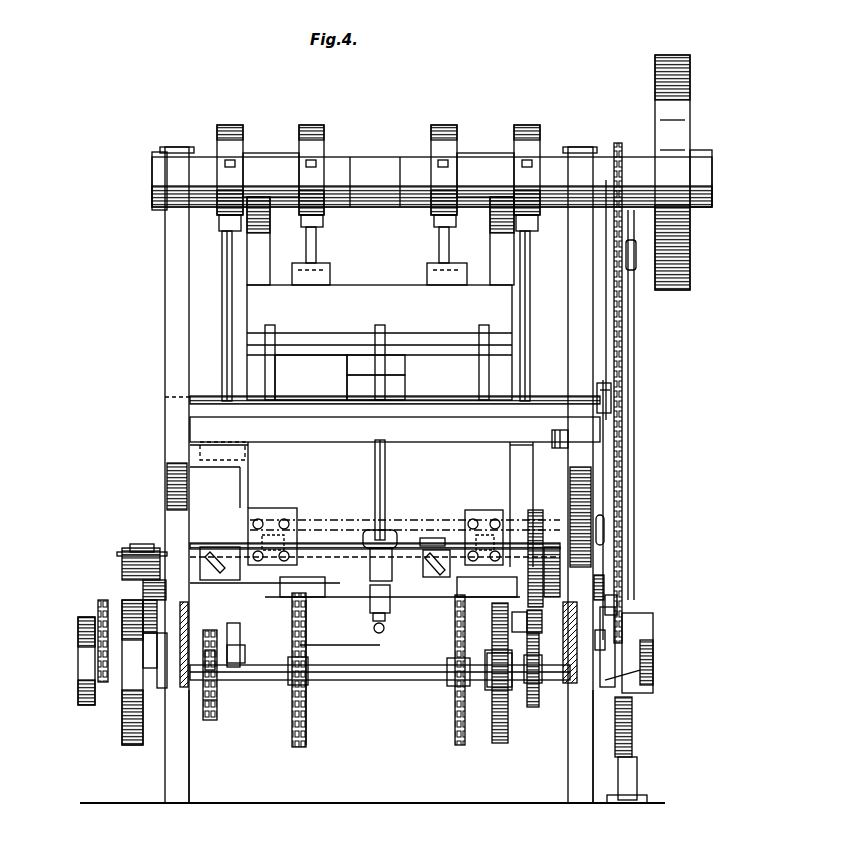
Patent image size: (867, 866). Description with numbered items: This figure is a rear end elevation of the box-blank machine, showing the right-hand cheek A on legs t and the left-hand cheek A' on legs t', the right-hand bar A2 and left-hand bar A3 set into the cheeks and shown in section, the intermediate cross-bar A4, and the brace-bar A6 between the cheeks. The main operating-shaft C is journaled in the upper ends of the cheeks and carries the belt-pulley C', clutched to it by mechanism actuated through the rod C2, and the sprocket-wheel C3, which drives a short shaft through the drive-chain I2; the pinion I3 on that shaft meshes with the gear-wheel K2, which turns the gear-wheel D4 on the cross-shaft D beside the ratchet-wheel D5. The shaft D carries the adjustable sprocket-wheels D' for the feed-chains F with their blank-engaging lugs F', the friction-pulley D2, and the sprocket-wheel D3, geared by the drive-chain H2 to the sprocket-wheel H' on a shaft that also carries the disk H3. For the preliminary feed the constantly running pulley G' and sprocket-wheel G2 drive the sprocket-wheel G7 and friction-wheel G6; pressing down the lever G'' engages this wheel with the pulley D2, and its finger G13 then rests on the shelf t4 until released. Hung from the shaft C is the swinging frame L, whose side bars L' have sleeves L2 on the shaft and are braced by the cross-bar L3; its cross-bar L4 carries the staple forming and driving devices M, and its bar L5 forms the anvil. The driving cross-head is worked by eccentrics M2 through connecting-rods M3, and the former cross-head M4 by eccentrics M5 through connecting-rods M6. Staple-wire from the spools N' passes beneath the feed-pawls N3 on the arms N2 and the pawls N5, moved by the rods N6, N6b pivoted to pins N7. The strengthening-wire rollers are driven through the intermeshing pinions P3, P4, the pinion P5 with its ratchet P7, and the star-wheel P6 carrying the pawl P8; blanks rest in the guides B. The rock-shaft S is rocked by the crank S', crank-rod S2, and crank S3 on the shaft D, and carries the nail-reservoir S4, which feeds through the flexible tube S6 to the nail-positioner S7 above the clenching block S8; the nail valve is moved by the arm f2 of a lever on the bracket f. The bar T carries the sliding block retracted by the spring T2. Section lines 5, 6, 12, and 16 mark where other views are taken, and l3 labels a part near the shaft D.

The section line 5 is at (252, 150).
The section line 16 is at (470, 367).
The section line 12 is at (600, 415).
The section line 6 is at (600, 507).
The right-hand cheek A is at (165, 475).
The left-hand cheek A' is at (573, 475).
The right-hand bar A2 is at (188, 630).
The left-hand bar A3 is at (578, 675).
The cross-bar A4 is at (352, 575).
The brace-bar A6 is at (325, 447).
The legs t is at (166, 746).
The legs t' is at (571, 746).
The lug or shelf t4 is at (615, 630).
The main operating-shaft C is at (432, 170).
The belt-pulley C' is at (655, 172).
The rod C2 is at (632, 345).
The sprocket-wheel C3 is at (617, 143).
The drive-chain I2 is at (620, 325).
The pinion I3 is at (540, 642).
The staple forming and driving devices M is at (300, 510).
The eccentrics M2 is at (380, 156).
The connecting-rods M3 is at (224, 290).
The cross-head M4 is at (379, 342).
The eccentrics M5 is at (378, 156).
The connecting-rods M6 is at (318, 250).
The swinging frame L is at (377, 362).
The side bars L' is at (380, 241).
The sleeves L2 is at (272, 152).
The cross-bar or brace L3 is at (318, 390).
The cross-bar L4 is at (398, 512).
The bar L5 is at (343, 635).
The rock-shaft S is at (382, 384).
The crank S' is at (628, 379).
The crank-rod S2 is at (600, 515).
The crank S3 is at (650, 672).
The nail-reservoir S4 is at (400, 385).
The flexible nail-feeding tube S6 is at (386, 478).
The nail-positioner S7 is at (392, 575).
The nail-clenching block S8 is at (390, 605).
The wire-carrying spool N' is at (151, 561).
The arms N2 is at (385, 545).
The wire-engaging feed-pawl N3 is at (120, 566).
The wire-engaging pawl N5 is at (436, 578).
The rod N6 is at (432, 531).
The bracket N6b is at (152, 544).
The pin N7 is at (136, 545).
The bracket f is at (548, 452).
The arm f2 is at (569, 437).
The pinion P3 is at (540, 515).
The pinion P4 is at (550, 565).
The pinion P5 is at (547, 621).
The star-wheel P6 is at (560, 540).
The ratchet P7 is at (595, 585).
The pawl P8 is at (545, 565).
The guides B is at (374, 630).
The gear-wheel K2 is at (535, 692).
The cross-shaft D is at (380, 675).
The sprocket-wheels D' is at (396, 672).
The friction drum or pulley D2 is at (122, 714).
The sprocket-wheel D3 is at (218, 690).
The gear-wheel D4 is at (508, 718).
The ratchet-wheel D5 is at (490, 690).
The feed-chains F is at (360, 670).
The feed-lugs F' is at (392, 604).
The pulley G' is at (74, 661).
The sprocket-wheel G2 is at (98, 658).
The friction-wheel G6 is at (132, 610).
The sprocket-wheel G7 is at (120, 600).
The lever G'' is at (627, 546).
The swinging finger G13 is at (610, 600).
The sprocket-wheel H' is at (222, 716).
The drive-chain H2 is at (223, 675).
The disk or wheel H3 is at (640, 705).
The link l3 is at (245, 660).
The bar T is at (650, 633).
The spring T2 is at (655, 655).